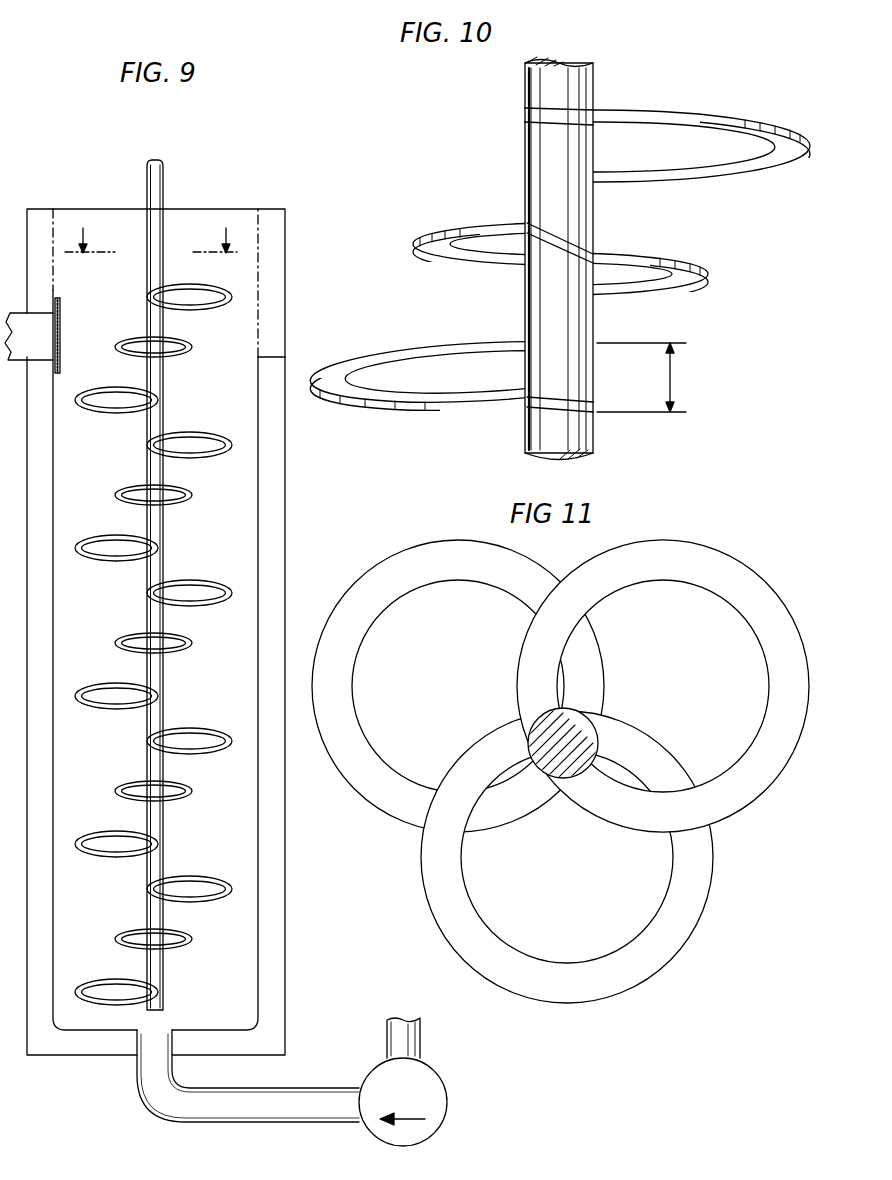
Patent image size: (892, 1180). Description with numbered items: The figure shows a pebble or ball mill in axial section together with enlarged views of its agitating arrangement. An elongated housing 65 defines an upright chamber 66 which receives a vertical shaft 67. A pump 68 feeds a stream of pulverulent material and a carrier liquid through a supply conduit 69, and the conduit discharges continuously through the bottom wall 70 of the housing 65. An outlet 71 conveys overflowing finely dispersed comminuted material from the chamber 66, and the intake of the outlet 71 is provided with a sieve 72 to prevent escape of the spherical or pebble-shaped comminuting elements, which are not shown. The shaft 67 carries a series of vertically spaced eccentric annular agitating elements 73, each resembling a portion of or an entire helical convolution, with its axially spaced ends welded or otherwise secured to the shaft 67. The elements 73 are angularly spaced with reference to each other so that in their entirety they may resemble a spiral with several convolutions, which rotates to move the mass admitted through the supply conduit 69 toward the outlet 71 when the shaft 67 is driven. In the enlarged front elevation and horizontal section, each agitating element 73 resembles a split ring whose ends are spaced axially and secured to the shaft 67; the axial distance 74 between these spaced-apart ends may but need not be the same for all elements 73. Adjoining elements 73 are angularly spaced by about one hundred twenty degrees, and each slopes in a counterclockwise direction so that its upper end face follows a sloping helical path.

In FIG. 9, the housing 65 is at (288, 535).
In FIG. 9, the chamber 66 is at (233, 979).
In FIG. 9, the shaft 67 is at (163, 523).
In FIG. 10, the shaft 67 is at (535, 170).
In FIG. 11, the shaft 67 is at (576, 762).
In FIG. 9, the pump 68 is at (434, 1092).
In FIG. 9, the supply conduit 69 is at (320, 1097).
In FIG. 9, the bottom wall 70 is at (88, 1040).
In FIG. 9, the outlet 71 is at (20, 333).
In FIG. 9, the sieve 72 is at (62, 342).
In FIG. 9, the agitating elements 73 is at (163, 706).
In FIG. 10, the agitating elements 73 is at (792, 158).
In FIG. 11, the agitating elements 73 is at (726, 569).
In FIG. 10, the axial distance 74 is at (652, 377).